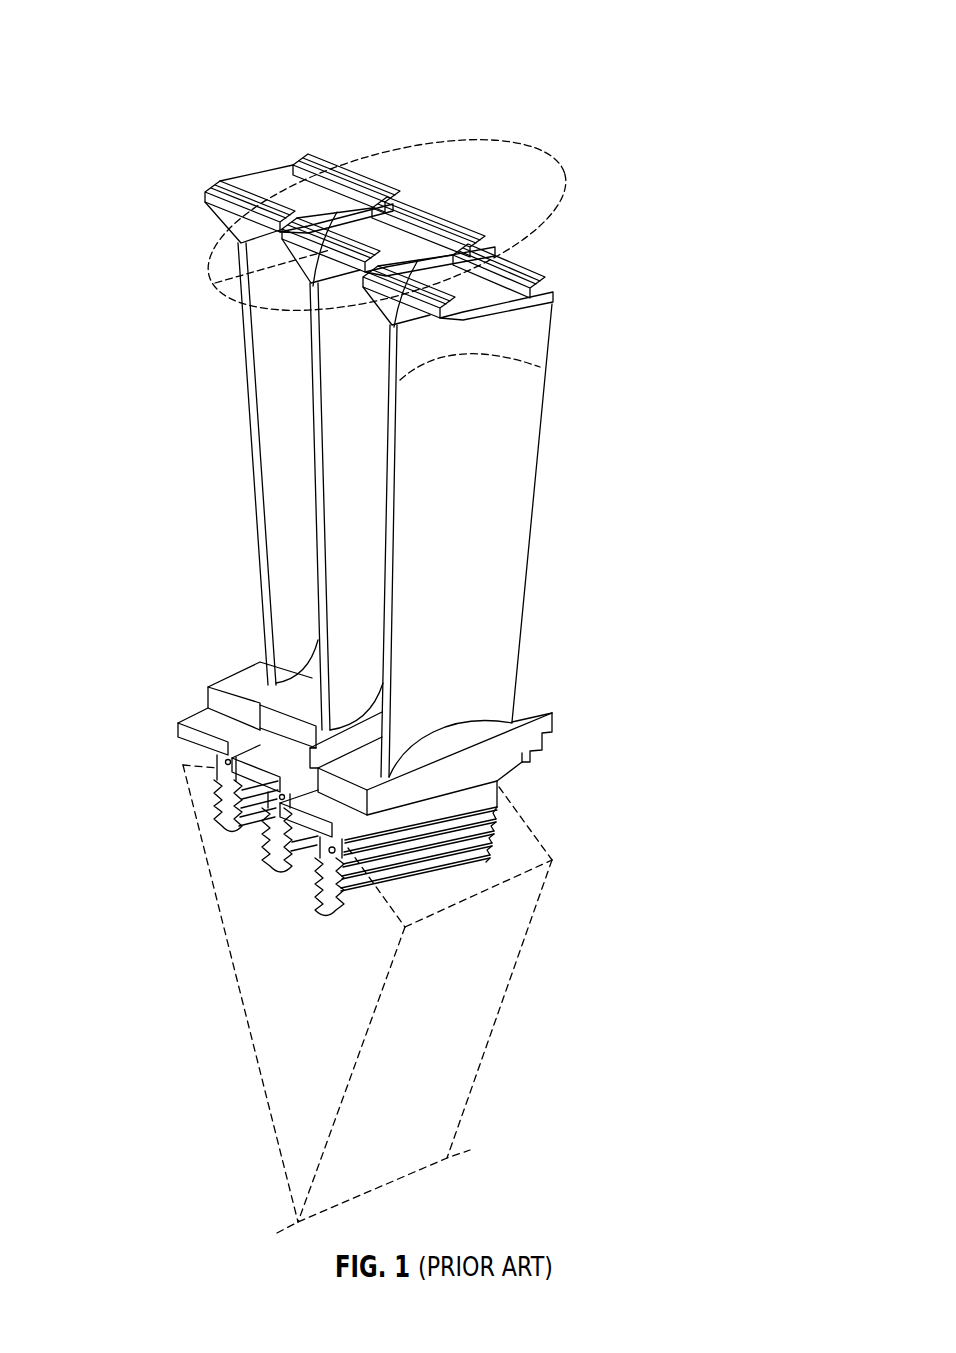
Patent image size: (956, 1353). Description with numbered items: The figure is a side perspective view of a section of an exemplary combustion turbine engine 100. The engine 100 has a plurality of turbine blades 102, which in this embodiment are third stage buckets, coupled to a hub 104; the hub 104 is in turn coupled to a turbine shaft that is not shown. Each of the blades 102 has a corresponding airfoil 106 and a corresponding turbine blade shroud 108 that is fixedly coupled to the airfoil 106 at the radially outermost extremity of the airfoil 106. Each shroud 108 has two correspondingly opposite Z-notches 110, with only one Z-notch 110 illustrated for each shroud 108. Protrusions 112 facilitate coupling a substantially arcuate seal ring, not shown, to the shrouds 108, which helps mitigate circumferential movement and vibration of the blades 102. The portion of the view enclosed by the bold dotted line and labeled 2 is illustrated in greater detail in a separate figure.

The combustion turbine engine 100 is at (188, 46).
The turbine blades 102 is at (268, 382).
The hub 104 is at (468, 1040).
The airfoil 106 is at (512, 448).
The turbine blade shroud 108 is at (287, 178).
The Z-notches 110 is at (264, 178).
The protrusions 112 is at (295, 165).
The enclosed portion 2 is at (207, 288).